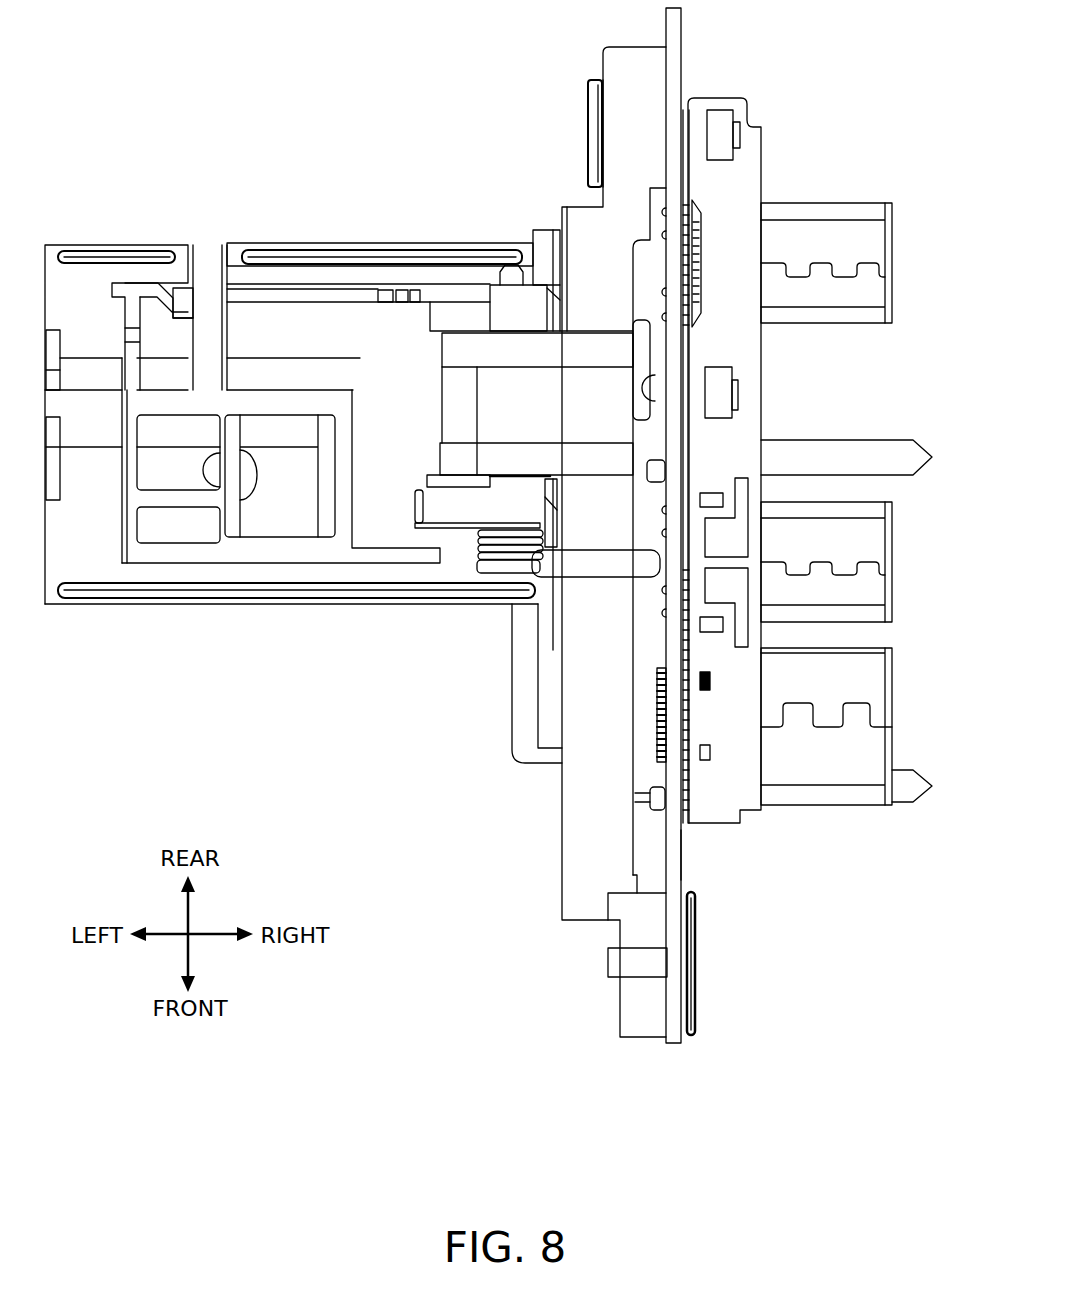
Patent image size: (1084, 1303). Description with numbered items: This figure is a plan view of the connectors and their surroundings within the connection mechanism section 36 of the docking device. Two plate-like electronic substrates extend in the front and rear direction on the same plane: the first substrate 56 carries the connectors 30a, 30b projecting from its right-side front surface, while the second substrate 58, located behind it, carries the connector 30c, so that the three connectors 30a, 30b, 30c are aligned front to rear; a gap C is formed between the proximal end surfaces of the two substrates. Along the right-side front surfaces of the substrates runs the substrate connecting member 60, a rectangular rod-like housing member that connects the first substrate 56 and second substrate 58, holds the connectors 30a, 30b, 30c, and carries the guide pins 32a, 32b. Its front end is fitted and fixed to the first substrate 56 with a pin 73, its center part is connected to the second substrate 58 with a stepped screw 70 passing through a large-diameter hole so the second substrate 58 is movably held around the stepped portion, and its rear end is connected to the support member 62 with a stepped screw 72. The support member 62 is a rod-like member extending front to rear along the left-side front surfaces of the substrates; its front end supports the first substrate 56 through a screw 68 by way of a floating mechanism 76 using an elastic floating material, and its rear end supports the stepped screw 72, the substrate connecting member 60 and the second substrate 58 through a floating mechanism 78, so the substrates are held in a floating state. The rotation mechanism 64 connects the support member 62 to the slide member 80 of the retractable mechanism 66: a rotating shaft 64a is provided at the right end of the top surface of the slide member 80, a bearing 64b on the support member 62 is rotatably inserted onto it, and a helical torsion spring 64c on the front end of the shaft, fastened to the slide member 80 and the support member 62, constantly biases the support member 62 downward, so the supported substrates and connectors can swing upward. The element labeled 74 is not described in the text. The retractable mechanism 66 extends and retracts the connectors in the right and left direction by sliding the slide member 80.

The connection mechanism section 36 is at (139, 112).
The second substrate 58 is at (681, 19).
The first substrate 56 is at (682, 855).
The support member 62 is at (572, 832).
The stepped screw 70 is at (647, 392).
The stepped screw 72 is at (597, 130).
The floating mechanism 78 is at (566, 97).
The pin 73 is at (650, 802).
The screw 68 is at (615, 962).
The floating mechanism 76 is at (712, 975).
The flexible board 74 is at (792, 182).
The substrate connecting member 60 is at (745, 343).
The gap C is at (675, 468).
The connector 30c is at (877, 243).
The connector 30b is at (877, 536).
The connector 30a is at (877, 677).
The guide pin 32b is at (917, 455).
The guide pin 32a is at (917, 784).
The retractable mechanism 66 is at (137, 618).
The slide member 80 is at (78, 558).
The rotation mechanism 64 is at (450, 567).
The rotating shaft 64a is at (503, 540).
The bearing 64b is at (488, 393).
The helical torsion spring 64c is at (508, 567).